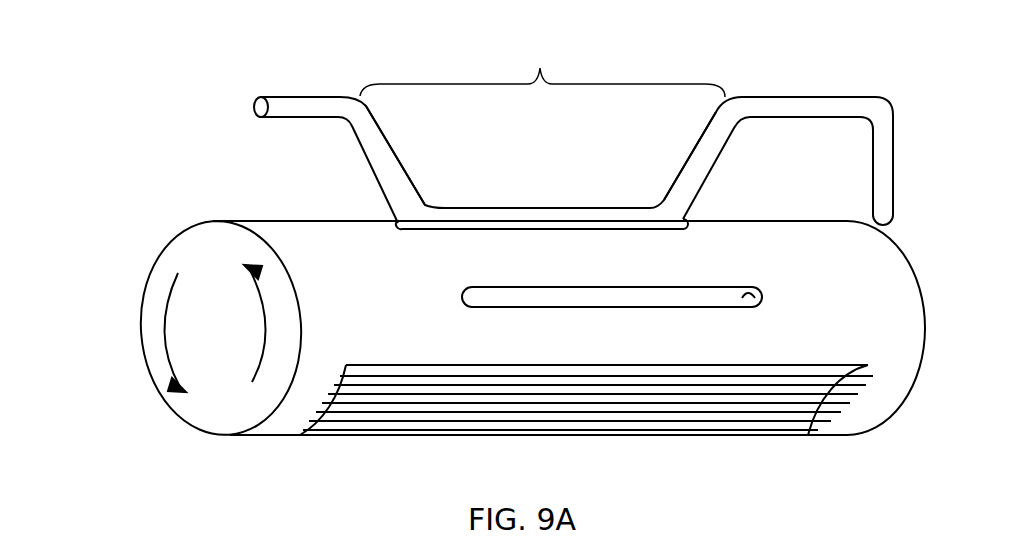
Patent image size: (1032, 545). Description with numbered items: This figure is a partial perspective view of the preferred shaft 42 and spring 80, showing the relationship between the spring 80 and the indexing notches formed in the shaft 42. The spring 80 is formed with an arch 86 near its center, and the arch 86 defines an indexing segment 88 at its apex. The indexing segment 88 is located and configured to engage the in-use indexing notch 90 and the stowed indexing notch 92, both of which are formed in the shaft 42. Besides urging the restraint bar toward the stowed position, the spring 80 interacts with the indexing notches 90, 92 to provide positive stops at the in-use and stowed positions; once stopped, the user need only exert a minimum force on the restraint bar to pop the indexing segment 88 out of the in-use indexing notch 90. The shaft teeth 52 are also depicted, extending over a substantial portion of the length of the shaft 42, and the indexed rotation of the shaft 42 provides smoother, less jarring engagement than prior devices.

The shaft 42 is at (223, 410).
The shaft teeth 52 is at (767, 407).
The spring 80 is at (305, 103).
The arch 86 is at (542, 119).
The indexing segment 88 is at (552, 215).
The in-use indexing notch 90 is at (397, 215).
The stowed indexing notch 92 is at (700, 298).